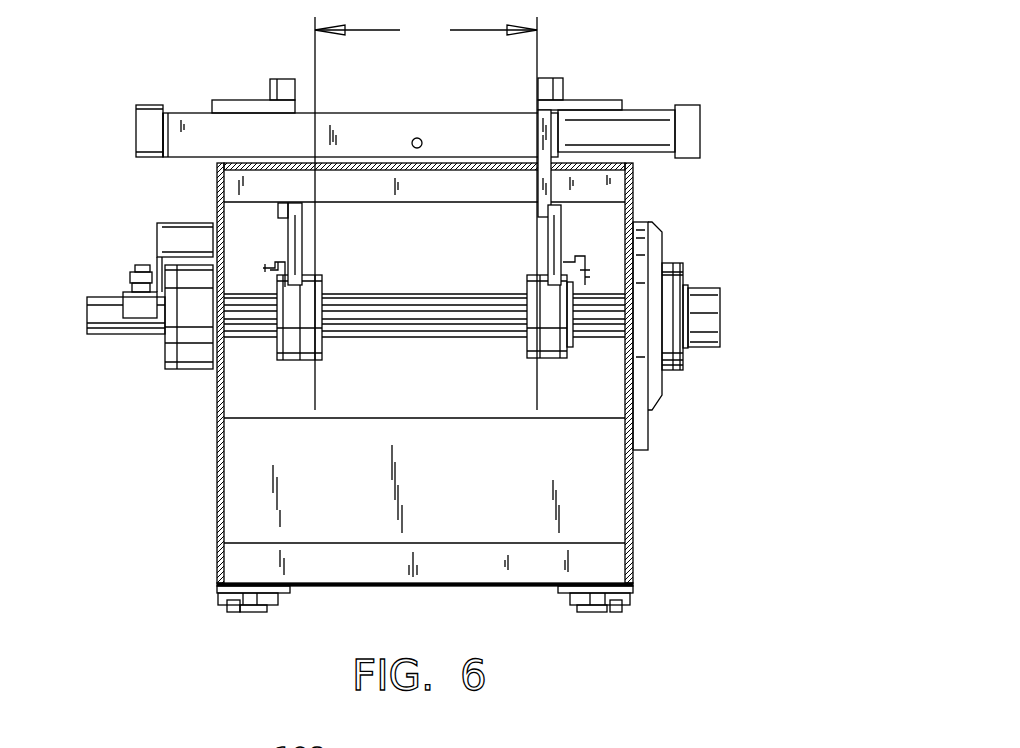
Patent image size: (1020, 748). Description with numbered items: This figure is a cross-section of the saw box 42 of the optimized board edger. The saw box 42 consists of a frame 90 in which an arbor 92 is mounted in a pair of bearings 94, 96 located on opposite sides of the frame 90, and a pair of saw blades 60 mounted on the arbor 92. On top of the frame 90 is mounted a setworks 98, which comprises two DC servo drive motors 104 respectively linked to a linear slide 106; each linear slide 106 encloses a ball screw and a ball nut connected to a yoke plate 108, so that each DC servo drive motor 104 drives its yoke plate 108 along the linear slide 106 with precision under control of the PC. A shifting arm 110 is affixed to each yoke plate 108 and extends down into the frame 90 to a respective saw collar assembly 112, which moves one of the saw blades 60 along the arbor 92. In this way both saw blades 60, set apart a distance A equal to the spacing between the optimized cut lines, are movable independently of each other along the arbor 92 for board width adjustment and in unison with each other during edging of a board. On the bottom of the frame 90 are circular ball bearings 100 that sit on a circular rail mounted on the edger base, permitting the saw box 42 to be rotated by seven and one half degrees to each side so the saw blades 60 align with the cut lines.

The saw box 42 is at (763, 127).
The saw blades 60 is at (538, 383).
The frame 90 is at (633, 557).
The arbor 92 is at (392, 293).
The bearing 94 is at (190, 370).
The bearing 96 is at (677, 370).
The setworks 98 is at (668, 72).
The circular ball bearings 100 is at (247, 617).
The DC servo drive motors 104 is at (132, 132).
The linear slide 106 is at (385, 113).
The yoke plate 108 is at (239, 99).
The shifting arm 110 is at (280, 247).
The saw collar assembly 112 is at (295, 360).